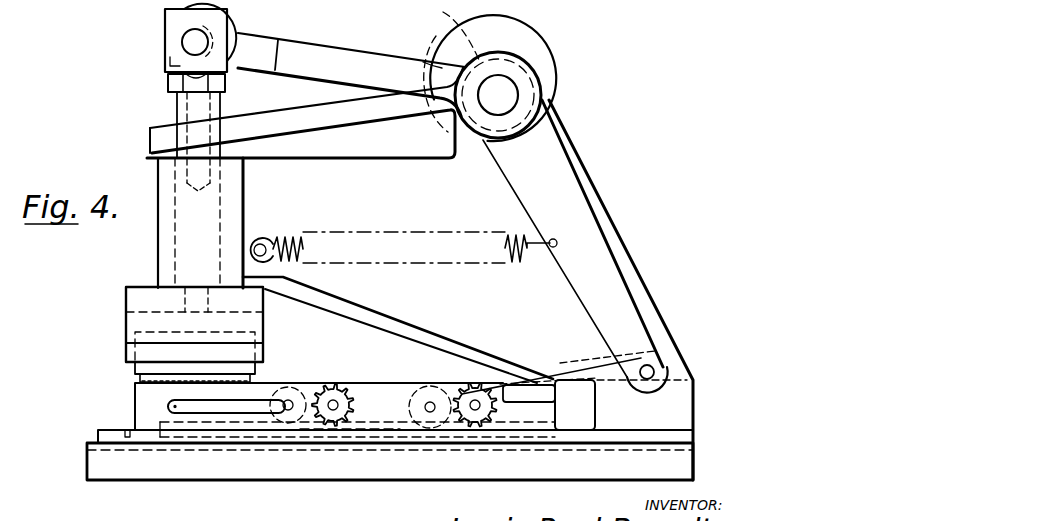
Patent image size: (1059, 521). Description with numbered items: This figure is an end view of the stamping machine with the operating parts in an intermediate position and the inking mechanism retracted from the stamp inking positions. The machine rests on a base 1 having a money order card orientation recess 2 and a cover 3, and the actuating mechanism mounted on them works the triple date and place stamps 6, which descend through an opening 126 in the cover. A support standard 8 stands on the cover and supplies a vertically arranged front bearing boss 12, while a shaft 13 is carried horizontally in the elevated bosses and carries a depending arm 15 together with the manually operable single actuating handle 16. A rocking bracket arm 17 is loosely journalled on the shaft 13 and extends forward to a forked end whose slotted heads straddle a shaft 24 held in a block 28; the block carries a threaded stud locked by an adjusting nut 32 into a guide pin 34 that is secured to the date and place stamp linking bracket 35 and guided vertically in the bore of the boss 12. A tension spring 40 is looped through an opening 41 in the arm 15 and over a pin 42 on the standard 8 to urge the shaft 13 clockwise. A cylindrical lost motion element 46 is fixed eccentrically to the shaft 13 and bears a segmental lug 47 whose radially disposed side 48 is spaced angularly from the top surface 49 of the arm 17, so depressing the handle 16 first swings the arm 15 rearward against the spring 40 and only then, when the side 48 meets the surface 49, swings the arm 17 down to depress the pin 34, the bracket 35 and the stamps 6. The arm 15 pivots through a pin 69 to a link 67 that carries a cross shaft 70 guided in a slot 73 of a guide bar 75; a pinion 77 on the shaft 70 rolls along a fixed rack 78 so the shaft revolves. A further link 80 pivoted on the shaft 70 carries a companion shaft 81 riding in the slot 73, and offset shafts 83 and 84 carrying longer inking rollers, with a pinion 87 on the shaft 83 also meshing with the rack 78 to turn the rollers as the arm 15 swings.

The base 1 is at (151, 478).
The money order card orientation slot or recess 2 is at (100, 452).
The cover 3 is at (105, 430).
The triple date and place stamps 6 is at (108, 328).
The support standard 8 is at (634, 274).
The front bearing boss 12 is at (158, 252).
The shaft 13 is at (515, 95).
The depending arm 15 is at (583, 212).
The single actuating handle 16 is at (305, 108).
The rocking bracket arm 17 is at (344, 54).
The shaft 24 is at (190, 42).
The block 28 is at (166, 64).
The adjusting nut 32 is at (168, 84).
The guide pin 34 is at (178, 108).
The date and place stamp linking bracket 35 is at (128, 295).
The tension spring 40 is at (302, 236).
The opening 41 is at (548, 254).
The pin 42 is at (260, 240).
The cylindrical coupling or lost motion element 46 is at (536, 46).
The segmental lug 47 is at (450, 31).
The radially disposed side 48 is at (437, 44).
The top side or surface 49 is at (423, 62).
The link 67 is at (587, 363).
The pin 69 is at (656, 372).
The cross shaft 70 is at (469, 424).
The slot 73 is at (224, 414).
The guide bar 75 is at (143, 401).
The pinion 77 is at (479, 388).
The fixed rack 78 is at (503, 444).
The link 80 is at (385, 383).
The companion shaft 81 is at (431, 400).
The shaft 83 is at (336, 397).
The shaft 84 is at (290, 396).
The pinion 87 is at (361, 428).
The opening 126 is at (125, 433).